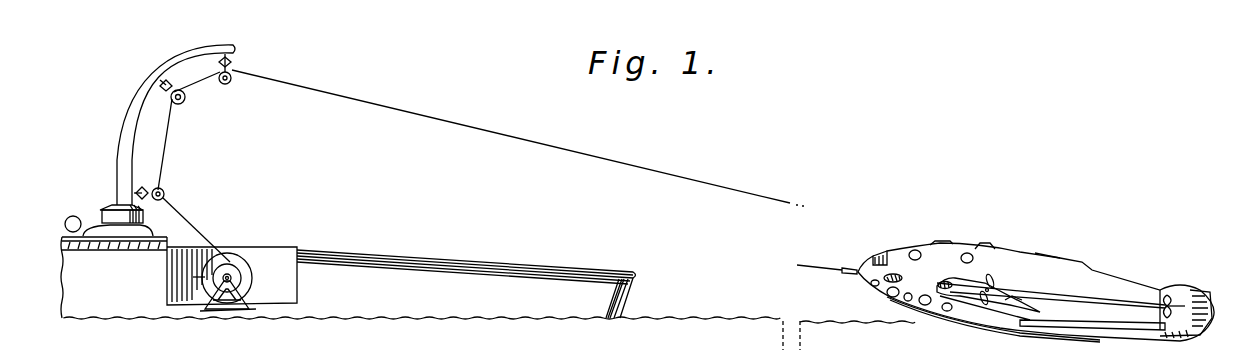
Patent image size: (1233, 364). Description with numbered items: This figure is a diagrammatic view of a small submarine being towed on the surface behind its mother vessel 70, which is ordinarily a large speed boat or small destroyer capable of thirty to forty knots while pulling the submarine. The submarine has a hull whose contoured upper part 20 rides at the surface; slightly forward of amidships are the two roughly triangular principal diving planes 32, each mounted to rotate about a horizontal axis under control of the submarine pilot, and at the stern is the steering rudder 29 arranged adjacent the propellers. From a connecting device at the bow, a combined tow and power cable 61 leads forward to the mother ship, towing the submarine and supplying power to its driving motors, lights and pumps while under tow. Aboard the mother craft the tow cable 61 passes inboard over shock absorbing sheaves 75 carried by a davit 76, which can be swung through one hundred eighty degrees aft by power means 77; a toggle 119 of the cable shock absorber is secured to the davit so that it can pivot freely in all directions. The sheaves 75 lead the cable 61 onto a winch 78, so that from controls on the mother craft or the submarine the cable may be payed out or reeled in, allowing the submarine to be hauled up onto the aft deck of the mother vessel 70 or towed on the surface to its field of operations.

The upper part of the hull 20 is at (902, 258).
The steering rudder 29 is at (1195, 296).
The principal diving planes 32 is at (1018, 300).
The combined tow and power cable 61 is at (731, 191).
The mother vessel 70 is at (522, 273).
The shock absorbing sheaves 75 is at (186, 99).
The davit 76 is at (118, 134).
The power means 77 is at (71, 215).
The winch 78 is at (240, 259).
The toggle 119 is at (231, 62).